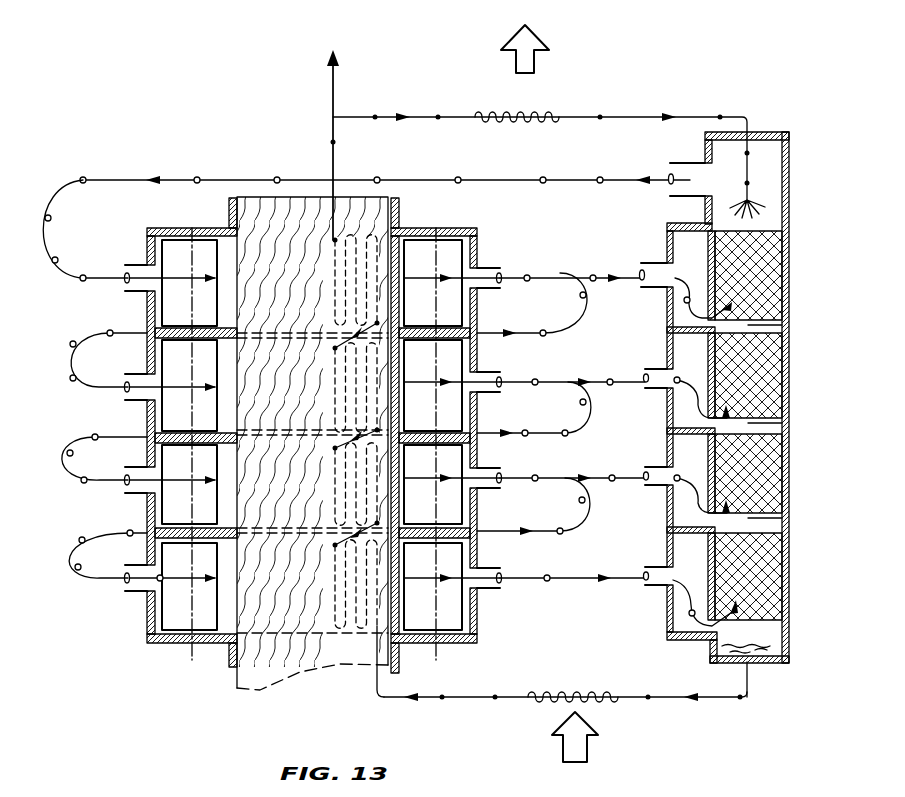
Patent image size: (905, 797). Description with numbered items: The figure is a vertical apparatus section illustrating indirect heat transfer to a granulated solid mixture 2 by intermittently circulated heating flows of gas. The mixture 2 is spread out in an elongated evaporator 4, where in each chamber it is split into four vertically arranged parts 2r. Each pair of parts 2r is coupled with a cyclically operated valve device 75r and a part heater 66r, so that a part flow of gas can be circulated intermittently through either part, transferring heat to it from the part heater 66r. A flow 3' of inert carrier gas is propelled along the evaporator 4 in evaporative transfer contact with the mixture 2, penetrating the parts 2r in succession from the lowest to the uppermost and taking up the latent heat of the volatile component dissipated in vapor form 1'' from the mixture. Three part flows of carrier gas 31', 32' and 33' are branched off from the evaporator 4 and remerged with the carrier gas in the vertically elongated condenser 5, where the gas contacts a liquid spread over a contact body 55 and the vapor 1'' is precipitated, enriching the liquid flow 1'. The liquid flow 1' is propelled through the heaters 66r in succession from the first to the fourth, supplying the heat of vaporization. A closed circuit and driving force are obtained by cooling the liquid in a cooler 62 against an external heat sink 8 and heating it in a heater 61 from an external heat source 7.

The liquid flow 1' is at (529, 395).
The vapor flow of volatile component 1'' is at (355, 373).
The mixture 2 is at (243, 667).
The parts of the mixture 2r is at (312, 280).
The carrier gas flow 3' is at (366, 364).
The evaporator 4 is at (440, 229).
The condenser 5 is at (786, 136).
The external heat source 7 is at (530, 64).
The external heat sink 8 is at (563, 745).
The part flow of carrier gas 31' is at (597, 255).
The part flow of carrier gas 32' is at (604, 362).
The part flow of carrier gas 33' is at (609, 452).
The contact body 55 is at (765, 385).
The heater 61 is at (563, 691).
The cooler 62 is at (498, 111).
The part heater 66r is at (335, 292).
The cyclically operated valve device 75r is at (173, 357).